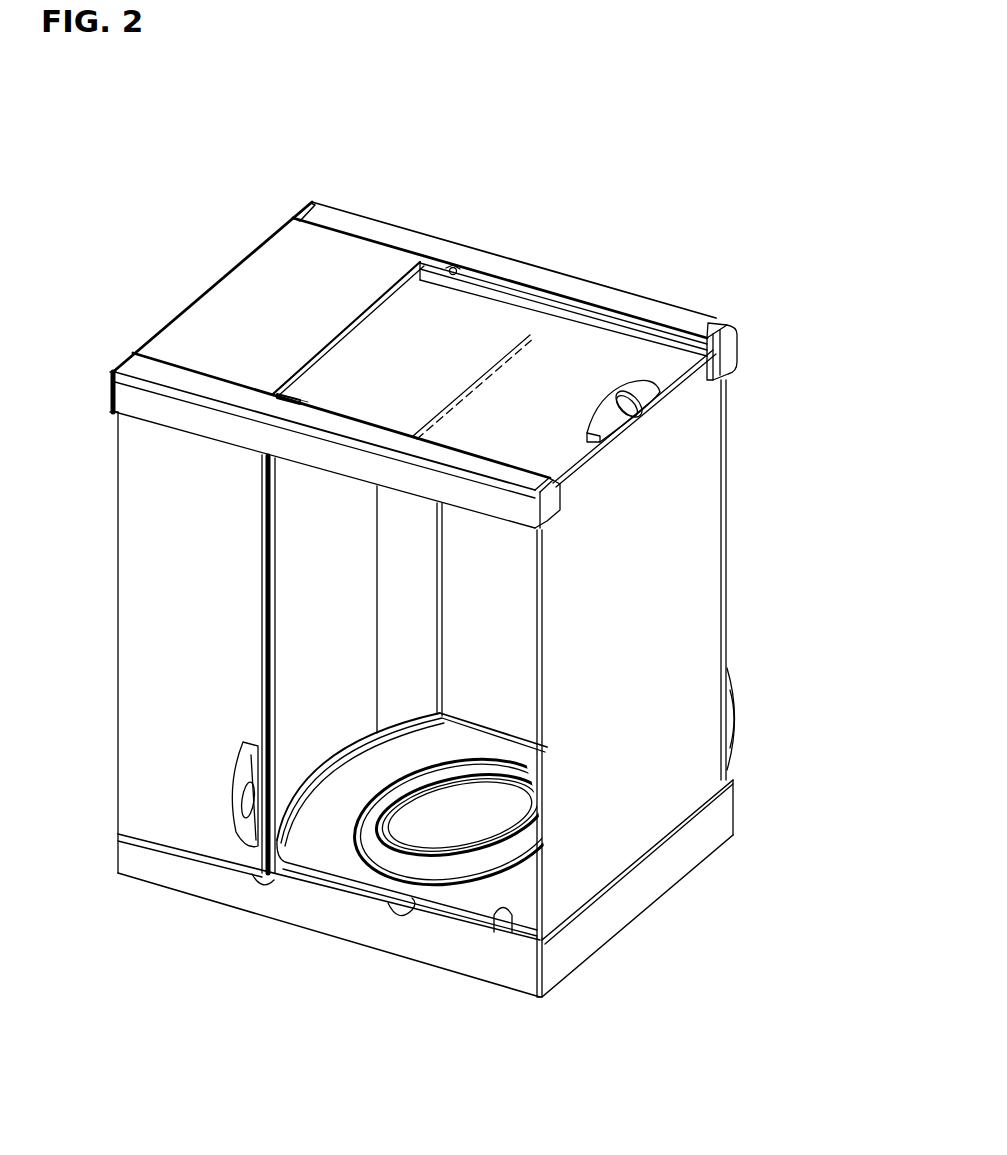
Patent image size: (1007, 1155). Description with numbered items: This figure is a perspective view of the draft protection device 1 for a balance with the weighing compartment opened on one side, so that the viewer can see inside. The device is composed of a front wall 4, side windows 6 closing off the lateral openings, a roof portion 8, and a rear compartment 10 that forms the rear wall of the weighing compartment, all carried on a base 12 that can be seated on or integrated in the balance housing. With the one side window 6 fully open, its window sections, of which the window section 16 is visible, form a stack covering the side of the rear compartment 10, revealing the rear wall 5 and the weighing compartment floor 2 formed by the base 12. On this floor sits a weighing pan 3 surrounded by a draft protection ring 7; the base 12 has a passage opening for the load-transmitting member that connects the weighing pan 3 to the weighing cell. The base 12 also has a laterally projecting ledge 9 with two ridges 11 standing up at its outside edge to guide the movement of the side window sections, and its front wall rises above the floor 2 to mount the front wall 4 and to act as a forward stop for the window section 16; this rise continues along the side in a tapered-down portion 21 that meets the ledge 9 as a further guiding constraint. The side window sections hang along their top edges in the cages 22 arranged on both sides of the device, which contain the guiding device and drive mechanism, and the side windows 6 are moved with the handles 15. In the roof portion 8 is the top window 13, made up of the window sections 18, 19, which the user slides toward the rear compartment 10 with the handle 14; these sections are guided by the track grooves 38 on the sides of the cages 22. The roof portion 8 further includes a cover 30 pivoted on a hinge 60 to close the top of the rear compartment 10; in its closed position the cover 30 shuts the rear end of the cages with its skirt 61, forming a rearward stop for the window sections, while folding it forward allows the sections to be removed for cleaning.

The draft protection device 1 is at (764, 233).
The weighing compartment floor 2 is at (412, 824).
The weighing pan 3 is at (440, 822).
The front wall 4 is at (674, 580).
The rear wall 5 is at (347, 609).
The window 6 is at (465, 609).
The draft protection ring 7 is at (468, 878).
The roof portion 8 is at (440, 207).
The ledge 9 is at (503, 930).
The rear compartment 10 is at (115, 692).
The ridges 11 is at (260, 882).
The base 12 is at (305, 910).
The top window 13 is at (532, 338).
The handle 14 is at (662, 407).
The handles 15 is at (246, 830).
The window section 16 is at (157, 623).
The window section 18 is at (674, 418).
The window section 19 is at (369, 372).
The tapered-down portion 21 is at (528, 950).
The cage 22 is at (650, 315).
The cover 30 is at (245, 302).
The track grooves 38 is at (516, 288).
The hinge 60 is at (456, 268).
The skirt 61 is at (298, 212).